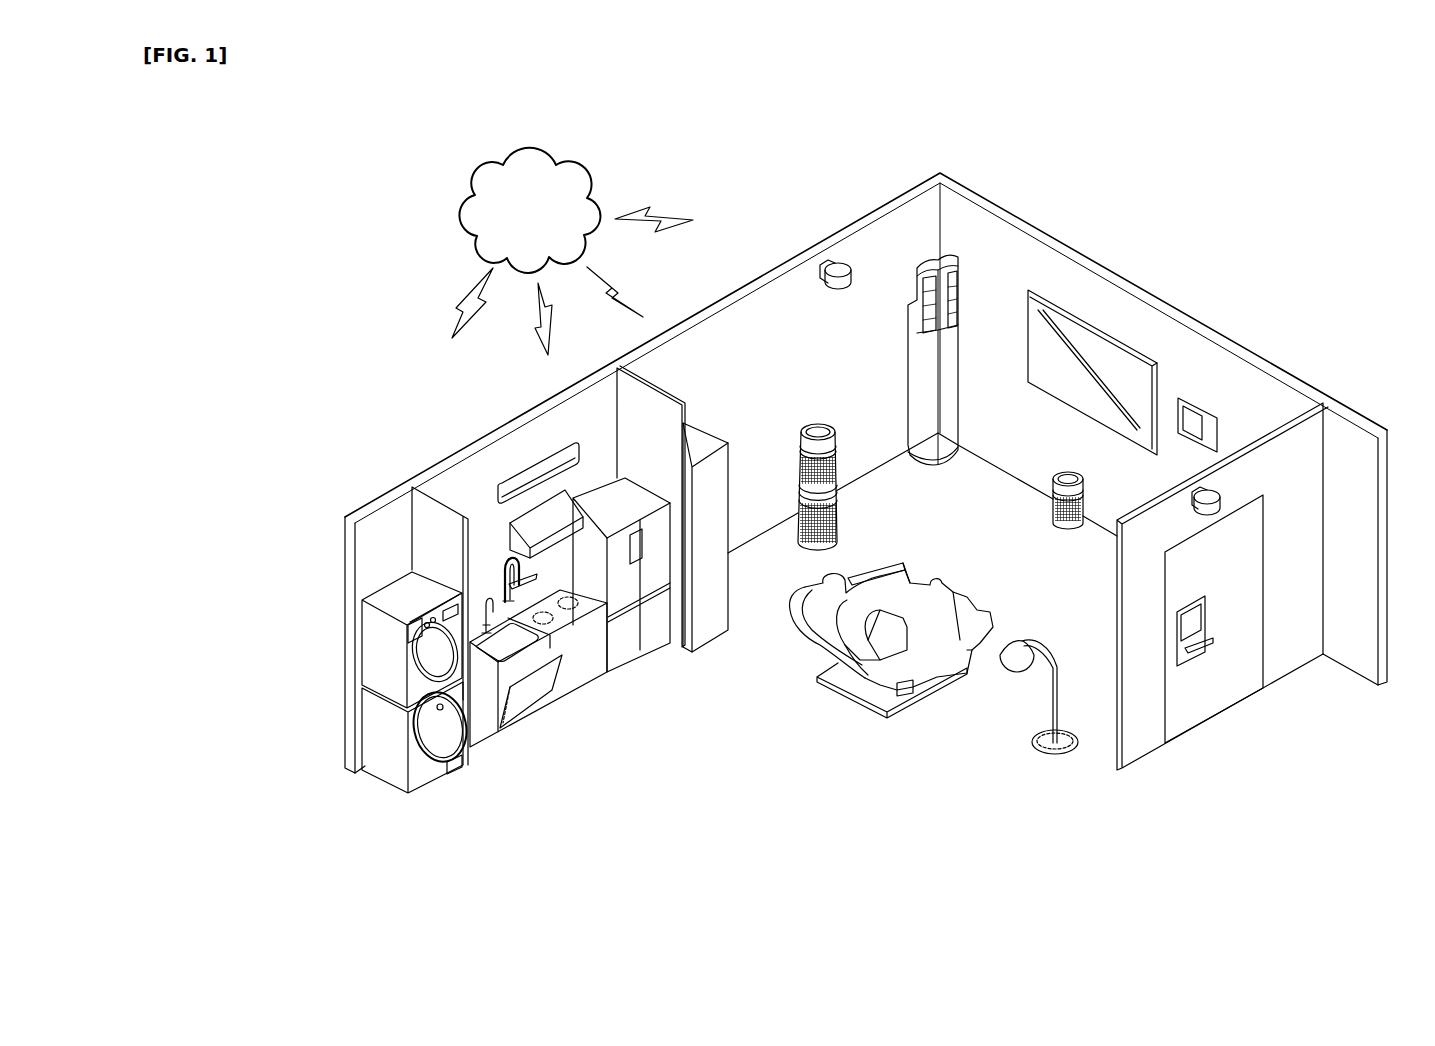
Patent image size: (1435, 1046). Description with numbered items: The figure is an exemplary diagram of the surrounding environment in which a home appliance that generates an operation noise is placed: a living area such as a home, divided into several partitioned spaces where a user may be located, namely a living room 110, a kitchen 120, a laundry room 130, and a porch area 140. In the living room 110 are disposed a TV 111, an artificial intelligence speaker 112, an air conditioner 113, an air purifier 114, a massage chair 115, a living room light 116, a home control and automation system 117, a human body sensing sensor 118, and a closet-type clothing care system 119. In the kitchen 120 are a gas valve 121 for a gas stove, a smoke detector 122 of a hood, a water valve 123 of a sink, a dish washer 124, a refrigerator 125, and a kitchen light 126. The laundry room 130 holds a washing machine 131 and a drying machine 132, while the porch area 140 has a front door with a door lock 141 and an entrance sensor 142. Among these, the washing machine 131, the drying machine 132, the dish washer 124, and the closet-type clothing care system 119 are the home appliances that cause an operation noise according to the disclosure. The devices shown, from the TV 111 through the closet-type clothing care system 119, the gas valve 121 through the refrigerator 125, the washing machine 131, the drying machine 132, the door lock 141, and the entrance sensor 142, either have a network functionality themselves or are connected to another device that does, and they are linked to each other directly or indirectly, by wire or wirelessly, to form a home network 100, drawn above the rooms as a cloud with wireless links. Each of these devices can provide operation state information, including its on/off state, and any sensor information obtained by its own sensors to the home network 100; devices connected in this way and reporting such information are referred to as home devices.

The home network 100 is at (475, 172).
The living room 110 is at (925, 743).
The TV 111 is at (1097, 345).
The artificial intelligence (AI) speaker 112 is at (1055, 530).
The air conditioner 113 is at (928, 255).
The air purifier 114 is at (845, 509).
The massage chair 115 is at (853, 682).
The living room light 116 is at (1035, 748).
The home control and automation system 117 is at (1203, 407).
The human body sensing sensor 118 is at (833, 260).
The closet-type clothing care system 119 is at (707, 633).
The kitchen 120 is at (598, 778).
The gas valve 121 is at (528, 583).
The smoke detector 122 is at (538, 523).
The water valve 123 is at (502, 625).
The dish washer 124 is at (523, 707).
The refrigerator 125 is at (632, 660).
The kitchen light 126 is at (553, 463).
The laundry room 130 is at (372, 800).
The washing machine 131 is at (370, 728).
The drying machine 132 is at (370, 657).
The porch area 140 is at (1285, 763).
The door lock 141 is at (1195, 658).
The entrance sensor 142 is at (1218, 520).